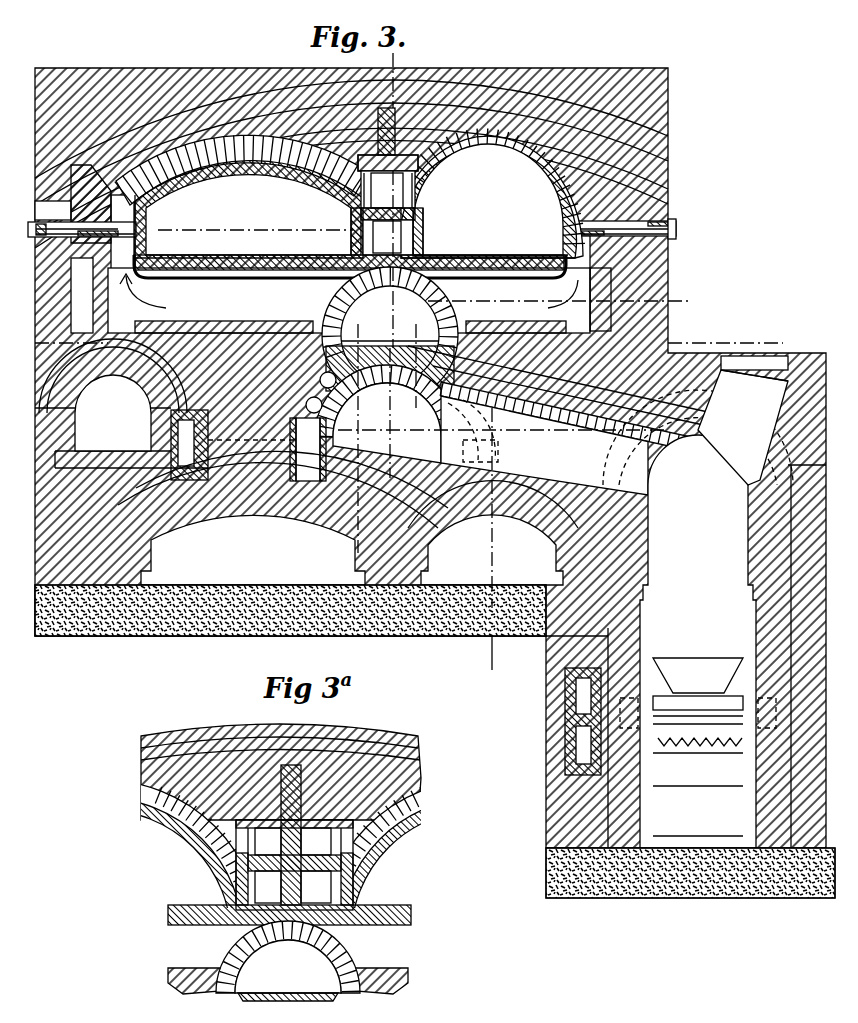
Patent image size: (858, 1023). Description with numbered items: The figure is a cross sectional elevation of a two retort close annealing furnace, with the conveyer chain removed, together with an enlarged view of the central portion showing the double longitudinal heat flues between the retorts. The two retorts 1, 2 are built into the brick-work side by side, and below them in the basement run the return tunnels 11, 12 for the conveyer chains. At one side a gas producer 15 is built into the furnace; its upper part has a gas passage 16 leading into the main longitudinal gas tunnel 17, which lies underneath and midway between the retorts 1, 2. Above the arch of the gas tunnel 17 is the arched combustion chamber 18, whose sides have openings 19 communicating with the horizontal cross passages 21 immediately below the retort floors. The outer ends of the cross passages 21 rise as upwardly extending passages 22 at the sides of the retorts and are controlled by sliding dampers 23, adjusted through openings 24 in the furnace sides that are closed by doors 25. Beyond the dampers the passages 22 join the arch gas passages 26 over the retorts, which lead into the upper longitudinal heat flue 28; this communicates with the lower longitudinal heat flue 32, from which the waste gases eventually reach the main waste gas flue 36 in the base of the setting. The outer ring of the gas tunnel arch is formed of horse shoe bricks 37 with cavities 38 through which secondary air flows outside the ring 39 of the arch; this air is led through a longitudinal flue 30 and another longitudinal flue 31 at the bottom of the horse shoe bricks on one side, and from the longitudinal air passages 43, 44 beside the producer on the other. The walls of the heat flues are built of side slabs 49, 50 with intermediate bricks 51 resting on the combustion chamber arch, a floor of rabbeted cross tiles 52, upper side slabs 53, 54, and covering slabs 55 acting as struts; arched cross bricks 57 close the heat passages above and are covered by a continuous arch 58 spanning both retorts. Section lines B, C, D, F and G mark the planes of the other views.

In FIG. 3, the retort 1 is at (242, 196).
In FIG. 3A, the retort 1 is at (134, 901).
In FIG. 3, the retort 2 is at (492, 197).
In FIG. 3A, the retort 2 is at (479, 901).
In FIG. 3, the return tunnel 11 is at (253, 550).
In FIG. 3, the return tunnel 12 is at (492, 550).
In FIG. 3, the gas producer 15 is at (698, 641).
In FIG. 3, the gas passage 16 is at (544, 445).
In FIG. 3, the main longitudinal gas tunnel 17 is at (387, 423).
In FIG. 3, the combustion chamber 18 is at (390, 335).
In FIG. 3A, the combustion chamber 18 is at (288, 970).
In FIG. 3, the opening 19 is at (387, 335).
In FIG. 3A, the opening 19 is at (232, 940).
In FIG. 3, the cross passage 21 is at (349, 300).
In FIG. 3A, the cross passage 21 is at (288, 969).
In FIG. 3, the upwardly extending passage 22 is at (350, 263).
In FIG. 3, the sliding damper 23 is at (135, 230).
In FIG. 3, the opening 24 is at (135, 213).
In FIG. 3, the door 25 is at (668, 232).
In FIG. 3, the arch gas passage 26 is at (552, 204).
In FIG. 3, the upper longitudinal heat flue 28 is at (388, 189).
In FIG. 3A, the upper longitudinal heat flue 28 is at (293, 841).
In FIG. 3, the longitudinal flue 30 is at (170, 432).
In FIG. 3, the longitudinal flue 31 is at (294, 475).
In FIG. 3, the lower longitudinal heat flue 32 is at (388, 237).
In FIG. 3A, the lower longitudinal heat flue 32 is at (293, 887).
In FIG. 3, the main waste gas flue 36 is at (113, 413).
In FIG. 3, the horse shoe brick 37 is at (276, 330).
In FIG. 3, the horse shoe shaped cavity 38 is at (330, 378).
In FIG. 3, the ring of the arch 39 is at (336, 406).
In FIG. 3, the longitudinal air passage 43 is at (568, 745).
In FIG. 3, the longitudinal air passage 44 is at (568, 685).
In FIG. 3, the side slab 49 is at (345, 237).
In FIG. 3A, the side slab 49 is at (228, 888).
In FIG. 3, the side slab 50 is at (416, 237).
In FIG. 3A, the side slab 50 is at (345, 885).
In FIG. 3, the intermediate brick 51 is at (451, 224).
In FIG. 3, the cross tile 52 is at (415, 222).
In FIG. 3A, the cross tile 52 is at (232, 884).
In FIG. 3, the side slab 53 is at (343, 216).
In FIG. 3A, the side slab 53 is at (228, 866).
In FIG. 3, the side slab 54 is at (410, 200).
In FIG. 3A, the side slab 54 is at (345, 850).
In FIG. 3, the covering slab 55 is at (352, 200).
In FIG. 3A, the covering slab 55 is at (228, 846).
In FIG. 3, the arched cross brick 57 is at (288, 130).
In FIG. 3A, the arched cross brick 57 is at (380, 812).
In FIG. 3, the continuous arch 58 is at (158, 110).
In FIG. 3, the section line B B is at (448, 368).
In FIG. 3, the section line C C is at (367, 377).
In FIG. 3, the section line D D is at (415, 338).
In FIG. 3, the section line F F is at (358, 438).
In FIG. 3A, the section line F F is at (262, 981).
In FIG. 3, the section line G G is at (503, 393).
In FIG. 3A, the section line G G is at (324, 967).